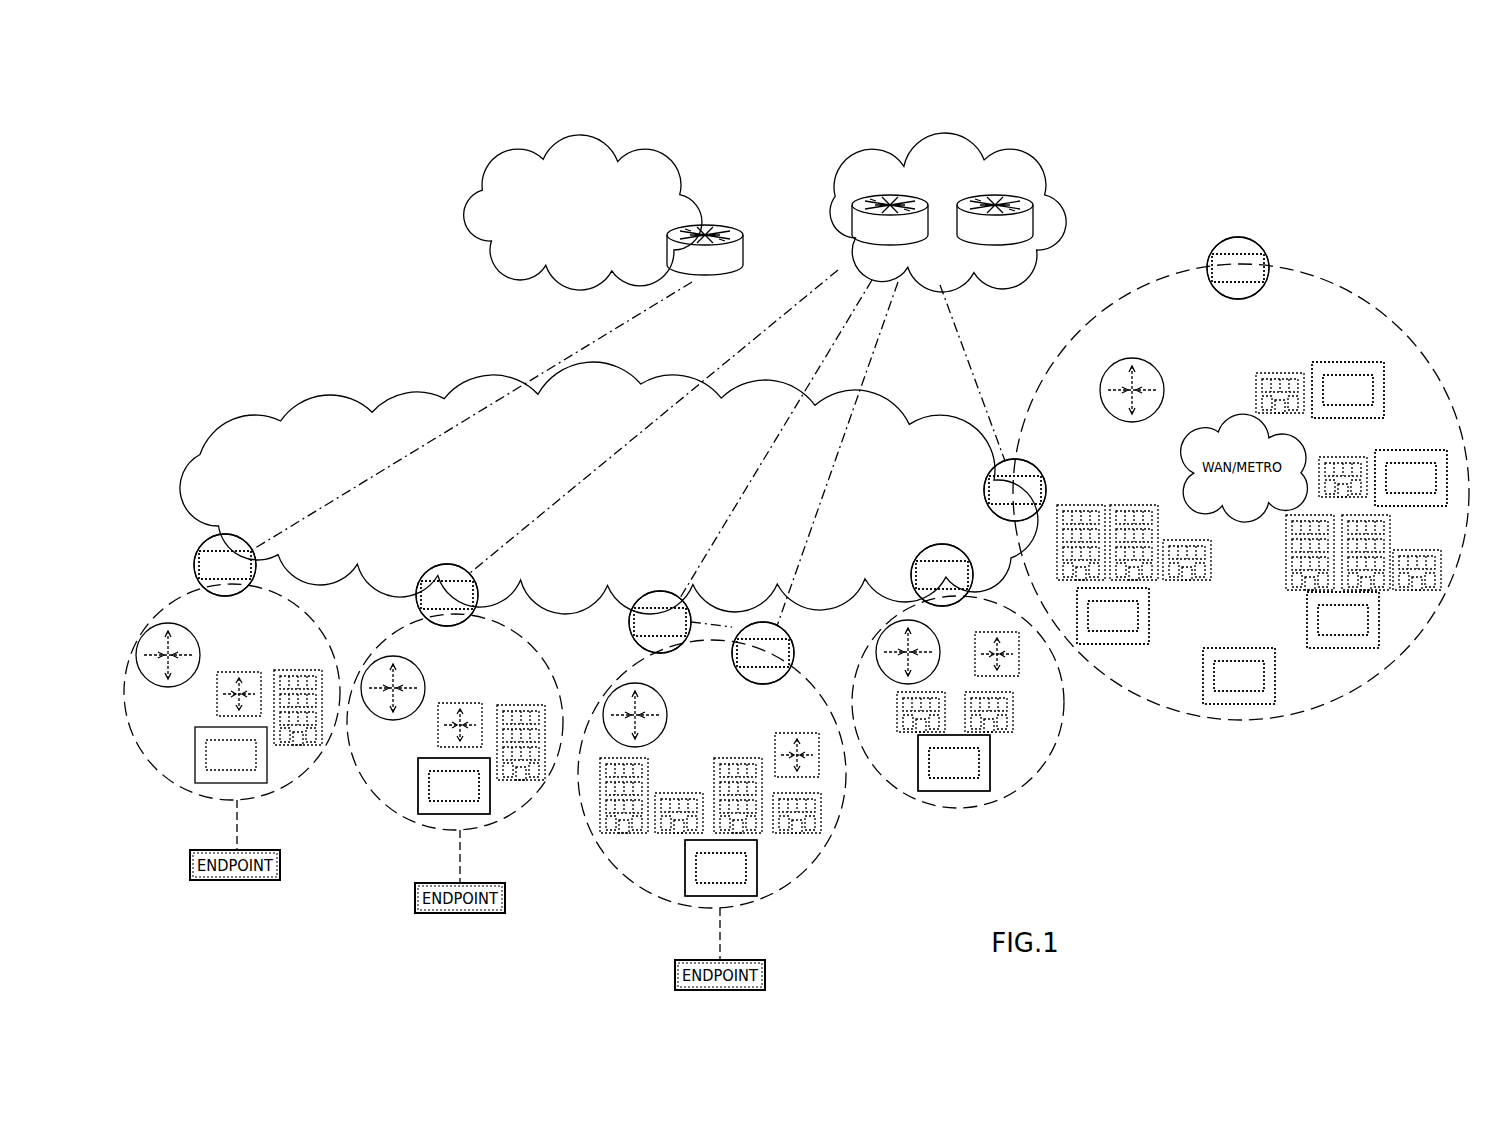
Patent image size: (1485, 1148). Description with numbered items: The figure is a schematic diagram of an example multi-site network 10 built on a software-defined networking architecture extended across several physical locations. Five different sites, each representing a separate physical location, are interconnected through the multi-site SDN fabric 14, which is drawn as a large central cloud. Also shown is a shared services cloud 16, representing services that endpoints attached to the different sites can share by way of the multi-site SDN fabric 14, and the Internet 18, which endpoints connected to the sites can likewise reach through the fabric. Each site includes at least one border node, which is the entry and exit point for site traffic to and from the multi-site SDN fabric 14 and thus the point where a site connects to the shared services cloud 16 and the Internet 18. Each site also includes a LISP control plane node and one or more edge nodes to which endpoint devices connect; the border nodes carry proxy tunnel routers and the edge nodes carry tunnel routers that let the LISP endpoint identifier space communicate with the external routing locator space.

The multi-site network 10 is at (369, 193).
The multi-site SDN fabric 14 is at (214, 436).
The shared services cloud 16 is at (484, 171).
The Internet 18 is at (845, 171).